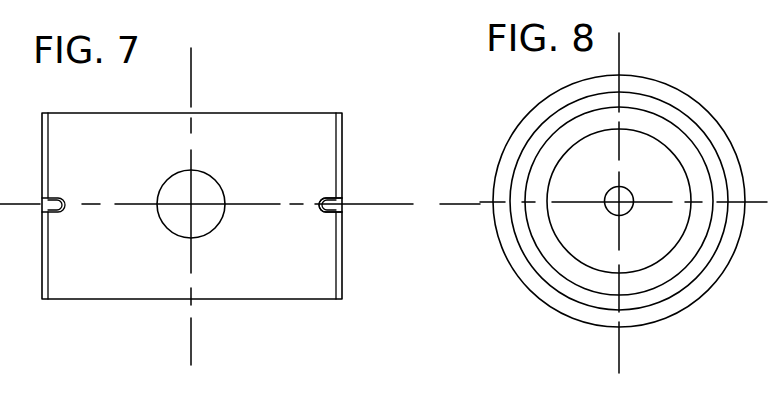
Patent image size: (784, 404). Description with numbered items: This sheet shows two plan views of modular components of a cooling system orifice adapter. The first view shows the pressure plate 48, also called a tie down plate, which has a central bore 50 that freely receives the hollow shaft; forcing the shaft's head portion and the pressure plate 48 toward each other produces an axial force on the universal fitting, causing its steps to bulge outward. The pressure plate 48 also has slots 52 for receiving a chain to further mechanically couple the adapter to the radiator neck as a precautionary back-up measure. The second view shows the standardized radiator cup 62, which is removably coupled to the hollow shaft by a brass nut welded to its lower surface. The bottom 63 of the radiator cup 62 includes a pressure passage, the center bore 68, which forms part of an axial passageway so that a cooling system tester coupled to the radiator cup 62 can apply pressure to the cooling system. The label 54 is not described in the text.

In FIG. 7, the pressure plate 48 is at (258, 299).
In FIG. 7, the central bore 50 is at (207, 185).
In FIG. 7, the slots 52 is at (338, 204).
In FIG. 8, the stem 54 is at (688, 0).
In FIG. 8, the radiator cup 62 is at (539, 301).
In FIG. 8, the bottom 63 is at (598, 192).
In FIG. 8, the center bore 68 is at (628, 192).